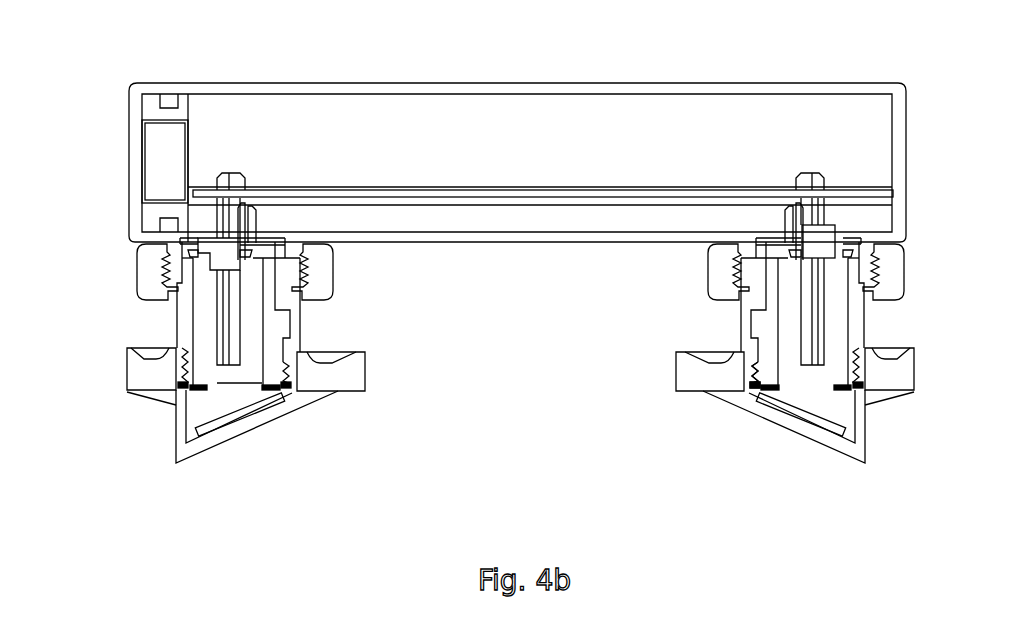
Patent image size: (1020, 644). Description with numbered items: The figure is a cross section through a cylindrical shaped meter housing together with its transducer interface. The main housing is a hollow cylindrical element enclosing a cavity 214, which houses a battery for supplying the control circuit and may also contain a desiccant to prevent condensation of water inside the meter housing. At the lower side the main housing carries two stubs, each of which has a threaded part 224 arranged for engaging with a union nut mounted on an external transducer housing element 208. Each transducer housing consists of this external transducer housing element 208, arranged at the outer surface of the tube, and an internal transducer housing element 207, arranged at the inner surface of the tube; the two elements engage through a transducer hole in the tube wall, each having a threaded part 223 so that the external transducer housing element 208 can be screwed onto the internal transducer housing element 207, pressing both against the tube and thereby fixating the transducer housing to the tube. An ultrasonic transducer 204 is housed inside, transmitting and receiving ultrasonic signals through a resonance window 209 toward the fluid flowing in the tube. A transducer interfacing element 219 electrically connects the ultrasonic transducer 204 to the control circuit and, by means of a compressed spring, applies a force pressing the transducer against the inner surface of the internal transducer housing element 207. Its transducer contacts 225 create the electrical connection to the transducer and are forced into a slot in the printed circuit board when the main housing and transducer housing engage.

The cavity 214 is at (392, 158).
The transducer contacts 225 is at (231, 181).
The threaded part 224 is at (732, 265).
The external transducer housing element 208 is at (286, 312).
The internal transducer housing element 207 is at (343, 376).
The resonance window 209 is at (262, 417).
The ultrasonic transducer 204 is at (230, 422).
The transducer interfacing element 219 is at (232, 386).
The threaded part 223 is at (755, 373).